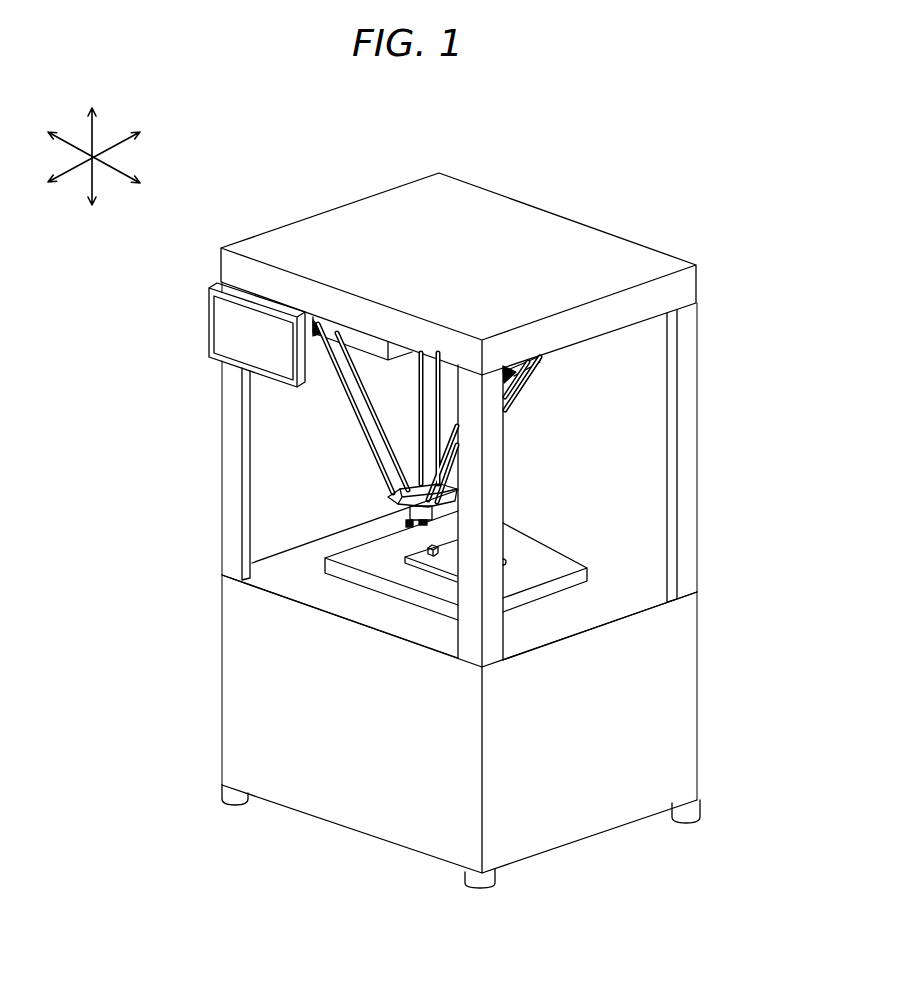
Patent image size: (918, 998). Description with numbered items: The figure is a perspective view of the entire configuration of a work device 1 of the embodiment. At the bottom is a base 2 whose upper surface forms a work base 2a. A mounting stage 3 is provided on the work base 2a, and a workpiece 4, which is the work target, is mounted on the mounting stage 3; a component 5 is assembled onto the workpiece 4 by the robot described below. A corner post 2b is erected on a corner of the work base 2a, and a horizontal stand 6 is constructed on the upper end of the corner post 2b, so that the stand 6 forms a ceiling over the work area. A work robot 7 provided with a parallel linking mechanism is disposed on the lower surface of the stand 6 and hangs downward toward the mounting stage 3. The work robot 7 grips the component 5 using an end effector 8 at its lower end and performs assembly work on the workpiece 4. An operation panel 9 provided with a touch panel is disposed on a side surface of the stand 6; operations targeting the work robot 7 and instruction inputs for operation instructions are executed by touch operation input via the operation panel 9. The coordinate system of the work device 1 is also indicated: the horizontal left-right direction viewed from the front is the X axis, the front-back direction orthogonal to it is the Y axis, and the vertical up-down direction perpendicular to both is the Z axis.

The work device 1 is at (445, 115).
The base 2 is at (243, 749).
The work base 2a is at (616, 575).
The corner post 2b is at (683, 406).
The mounting stage 3 is at (370, 557).
The workpiece 4 is at (448, 562).
The component 5 is at (450, 563).
The stand 6 is at (300, 232).
The work robot 7 is at (307, 409).
The end effector 8 is at (403, 507).
The operation panel 9 is at (228, 331).